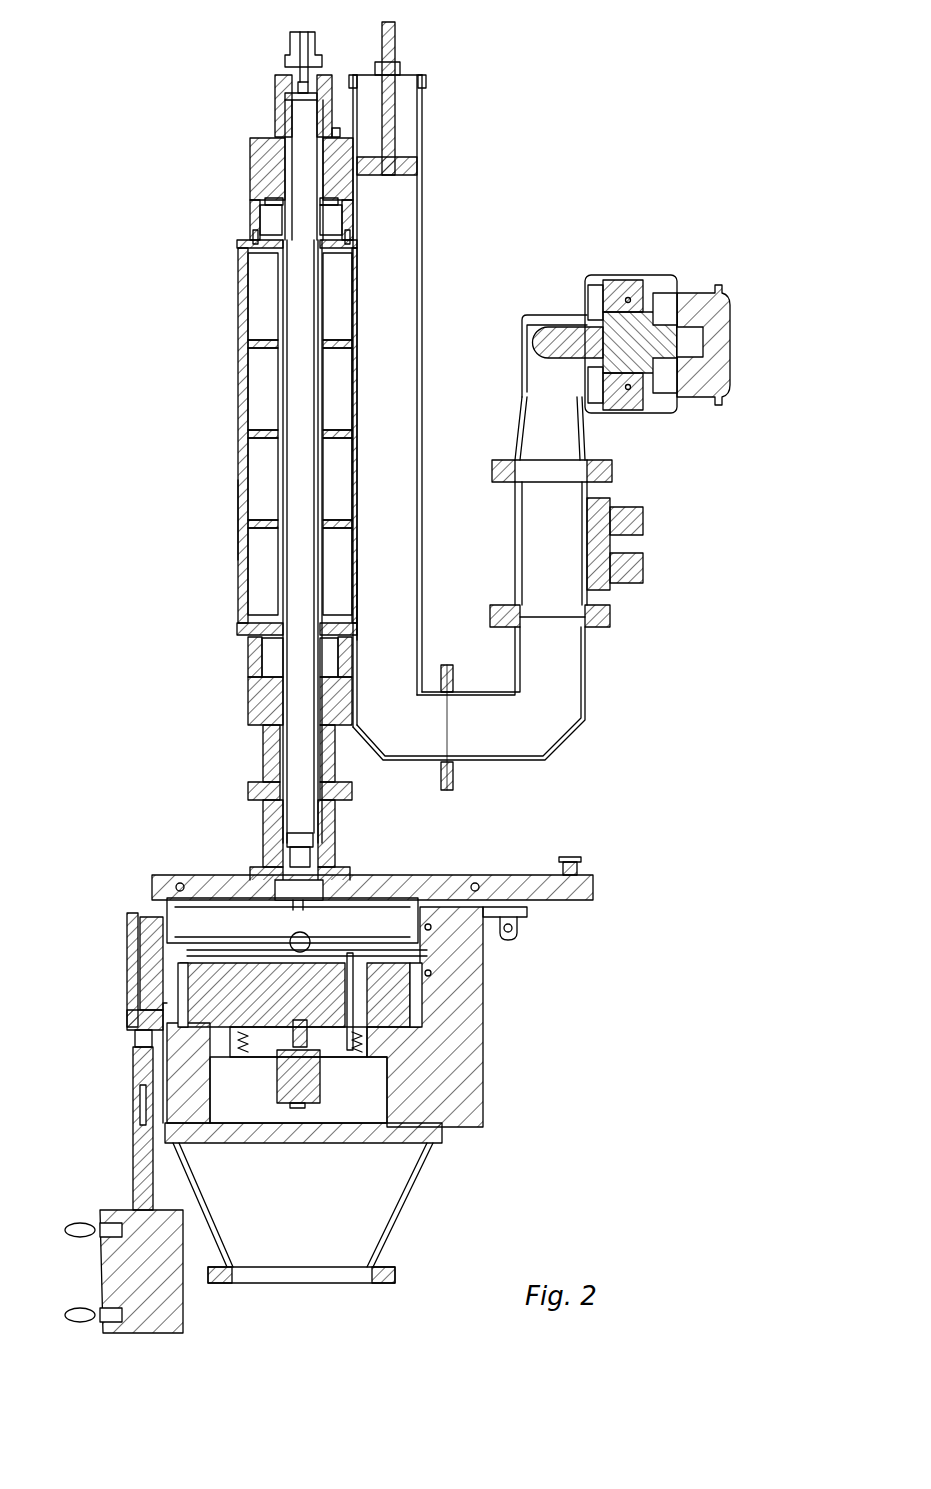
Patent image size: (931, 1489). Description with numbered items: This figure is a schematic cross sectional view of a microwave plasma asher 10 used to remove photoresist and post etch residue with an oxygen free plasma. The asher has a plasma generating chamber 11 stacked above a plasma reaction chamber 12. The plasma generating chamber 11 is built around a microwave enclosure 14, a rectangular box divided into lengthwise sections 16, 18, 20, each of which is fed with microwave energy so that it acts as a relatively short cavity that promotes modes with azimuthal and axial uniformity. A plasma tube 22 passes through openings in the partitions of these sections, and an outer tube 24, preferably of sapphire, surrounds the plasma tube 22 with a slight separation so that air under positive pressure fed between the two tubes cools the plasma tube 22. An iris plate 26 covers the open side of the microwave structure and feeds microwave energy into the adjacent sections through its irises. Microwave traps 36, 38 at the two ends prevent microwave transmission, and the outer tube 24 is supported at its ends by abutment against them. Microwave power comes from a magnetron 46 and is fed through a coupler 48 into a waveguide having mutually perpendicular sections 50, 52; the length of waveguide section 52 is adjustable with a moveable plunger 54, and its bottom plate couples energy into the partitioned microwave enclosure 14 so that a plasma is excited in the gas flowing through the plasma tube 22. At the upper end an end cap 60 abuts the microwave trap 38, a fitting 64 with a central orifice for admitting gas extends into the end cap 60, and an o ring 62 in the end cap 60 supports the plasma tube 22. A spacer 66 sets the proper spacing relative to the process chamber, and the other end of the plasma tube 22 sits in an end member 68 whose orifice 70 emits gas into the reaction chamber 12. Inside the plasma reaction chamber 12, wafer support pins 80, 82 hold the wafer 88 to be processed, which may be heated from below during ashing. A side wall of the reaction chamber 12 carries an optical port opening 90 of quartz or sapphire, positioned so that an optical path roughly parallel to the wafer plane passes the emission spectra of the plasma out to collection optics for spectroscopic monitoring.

The microwave plasma asher 10 is at (92, 215).
The plasma generating chamber 11 is at (205, 512).
The plasma reaction chamber 12 is at (83, 990).
The microwave enclosure 14 is at (240, 400).
The lengthwise section 16 is at (340, 352).
The lengthwise section 18 is at (340, 440).
The lengthwise section 20 is at (340, 545).
The plasma tube 22 is at (288, 178).
The outer tube 24 is at (276, 293).
The iris plate 26 is at (357, 595).
The microwave trap 36 is at (251, 697).
The microwave trap 38 is at (251, 218).
The magnetron 46 is at (680, 415).
The coupler 48 is at (612, 592).
The waveguide section 50 is at (505, 762).
The waveguide section 52 is at (420, 468).
The moveable plunger 54 is at (390, 160).
The end cap 60 is at (276, 92).
The o ring 62 is at (276, 112).
The fitting 64 is at (290, 45).
The spacer 66 is at (265, 775).
The end member 68 is at (264, 838).
The orifice 70 is at (333, 853).
The wafer support pin 80 is at (355, 975).
The wafer support pin 82 is at (136, 942).
The wafer 88 is at (427, 950).
The optical port opening 90 is at (300, 932).